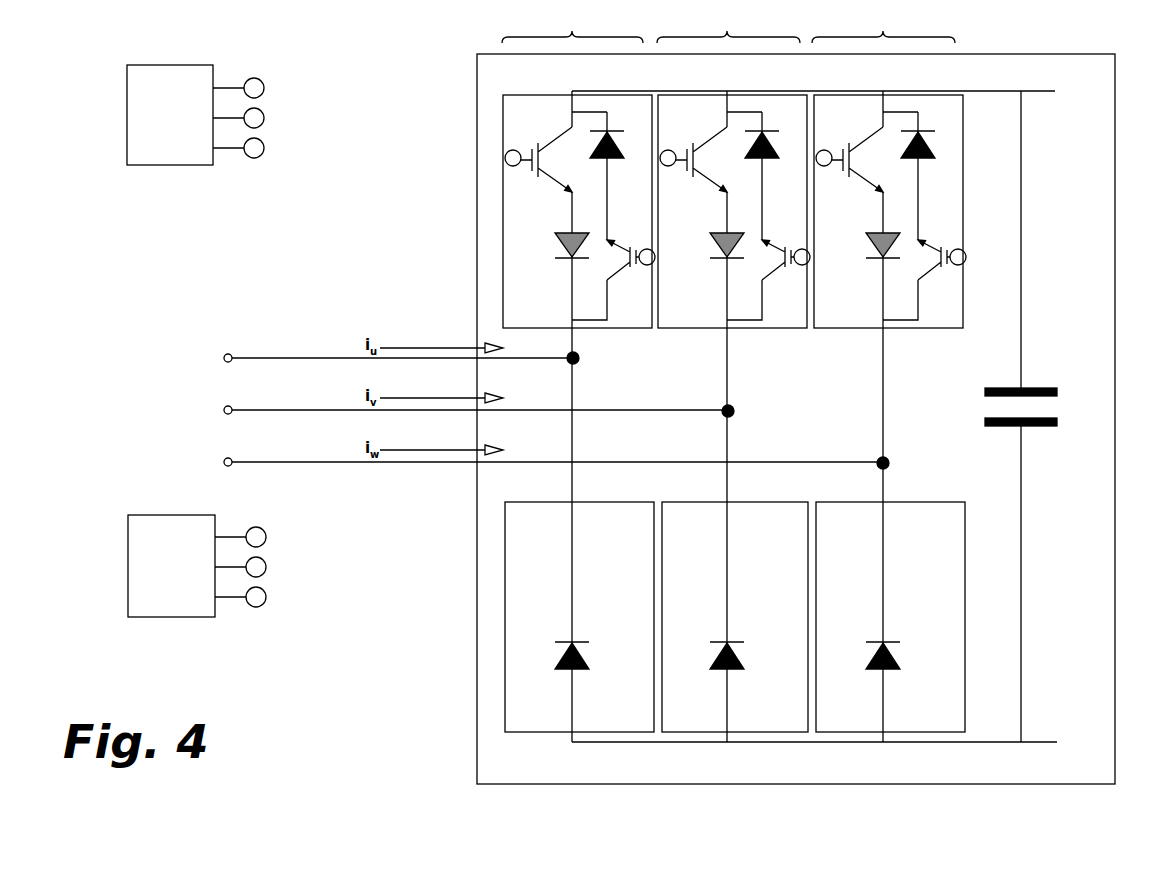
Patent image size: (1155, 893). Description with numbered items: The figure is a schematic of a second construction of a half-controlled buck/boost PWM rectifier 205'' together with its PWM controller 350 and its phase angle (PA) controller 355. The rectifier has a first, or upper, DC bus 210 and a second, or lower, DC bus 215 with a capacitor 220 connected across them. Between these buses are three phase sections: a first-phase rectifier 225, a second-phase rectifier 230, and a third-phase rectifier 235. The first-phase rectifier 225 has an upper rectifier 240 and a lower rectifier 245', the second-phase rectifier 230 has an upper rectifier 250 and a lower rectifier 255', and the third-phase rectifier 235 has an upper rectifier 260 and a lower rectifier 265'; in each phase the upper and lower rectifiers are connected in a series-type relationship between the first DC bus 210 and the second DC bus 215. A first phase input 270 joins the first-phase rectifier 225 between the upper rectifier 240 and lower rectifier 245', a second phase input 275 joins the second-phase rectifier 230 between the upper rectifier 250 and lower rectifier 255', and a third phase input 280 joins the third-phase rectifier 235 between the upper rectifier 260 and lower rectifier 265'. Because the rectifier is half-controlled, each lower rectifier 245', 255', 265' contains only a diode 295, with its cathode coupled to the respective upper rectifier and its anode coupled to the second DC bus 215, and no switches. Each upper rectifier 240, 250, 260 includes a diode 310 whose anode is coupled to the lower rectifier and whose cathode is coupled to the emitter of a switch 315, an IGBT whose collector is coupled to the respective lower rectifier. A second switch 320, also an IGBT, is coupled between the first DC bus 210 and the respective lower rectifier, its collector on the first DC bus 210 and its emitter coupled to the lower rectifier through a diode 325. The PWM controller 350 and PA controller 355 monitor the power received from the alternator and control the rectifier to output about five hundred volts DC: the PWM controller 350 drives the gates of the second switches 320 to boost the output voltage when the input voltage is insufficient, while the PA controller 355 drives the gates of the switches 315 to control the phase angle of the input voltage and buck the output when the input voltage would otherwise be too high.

The half-controlled PWM rectifier 205'' is at (771, 404).
The first DC bus 210 is at (984, 91).
The second DC bus 215 is at (1003, 743).
The capacitor 220 is at (1008, 389).
The first-phase rectifier 225 is at (572, 30).
The second-phase rectifier 230 is at (728, 30).
The third-phase rectifier 235 is at (883, 30).
The upper rectifier 240 is at (640, 329).
The upper rectifier 250 is at (795, 329).
The upper rectifier 260 is at (951, 329).
The lower rectifier 245' is at (579, 600).
The lower rectifier 255' is at (729, 600).
The lower rectifier 265' is at (890, 600).
The first phase input 270 is at (231, 354).
The second phase input 275 is at (231, 406).
The third phase input 280 is at (231, 458).
The diode 295 is at (567, 654).
The diode 310 is at (618, 147).
The switch 315 is at (633, 267).
The second switch 320 is at (530, 145).
The diode 325 is at (557, 243).
The PWM controller 350 is at (128, 108).
The PA controller 355 is at (128, 557).